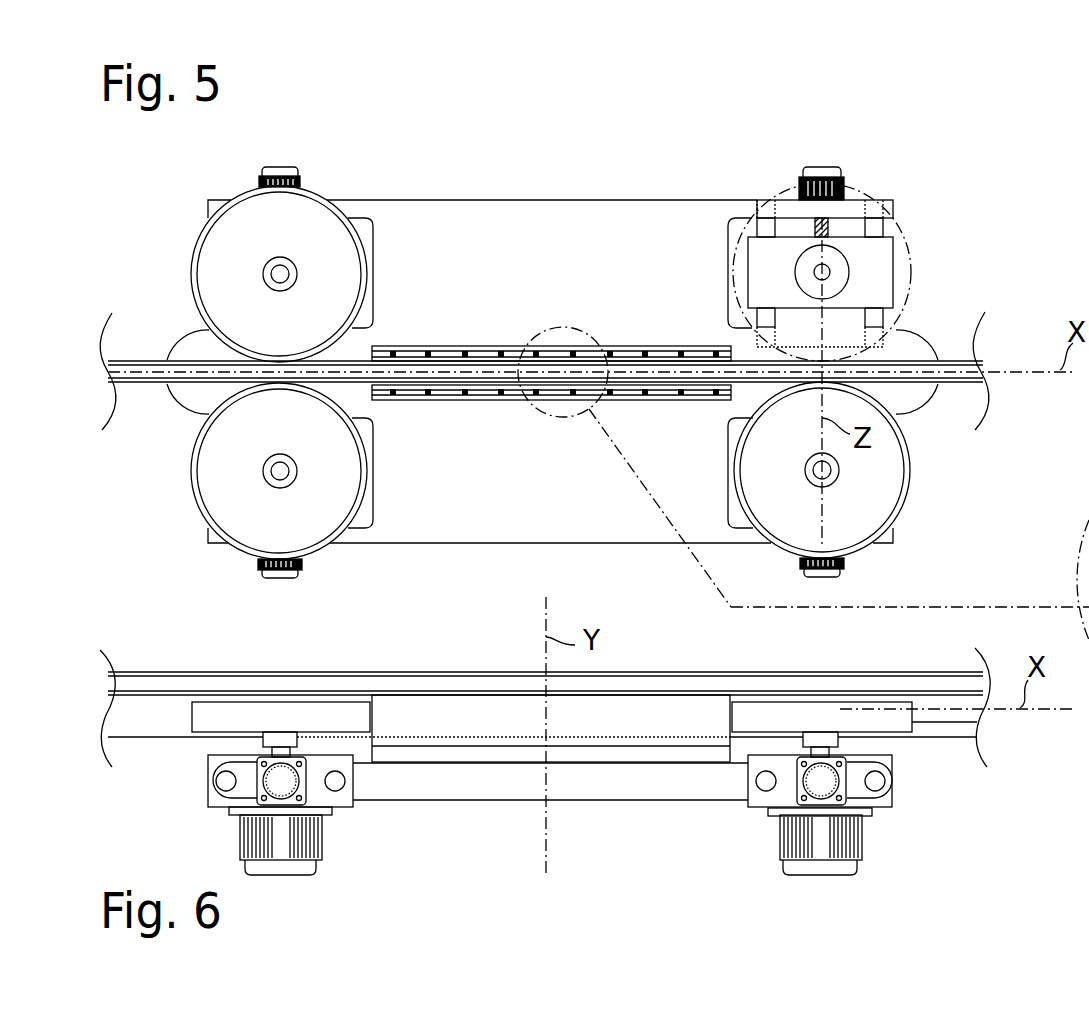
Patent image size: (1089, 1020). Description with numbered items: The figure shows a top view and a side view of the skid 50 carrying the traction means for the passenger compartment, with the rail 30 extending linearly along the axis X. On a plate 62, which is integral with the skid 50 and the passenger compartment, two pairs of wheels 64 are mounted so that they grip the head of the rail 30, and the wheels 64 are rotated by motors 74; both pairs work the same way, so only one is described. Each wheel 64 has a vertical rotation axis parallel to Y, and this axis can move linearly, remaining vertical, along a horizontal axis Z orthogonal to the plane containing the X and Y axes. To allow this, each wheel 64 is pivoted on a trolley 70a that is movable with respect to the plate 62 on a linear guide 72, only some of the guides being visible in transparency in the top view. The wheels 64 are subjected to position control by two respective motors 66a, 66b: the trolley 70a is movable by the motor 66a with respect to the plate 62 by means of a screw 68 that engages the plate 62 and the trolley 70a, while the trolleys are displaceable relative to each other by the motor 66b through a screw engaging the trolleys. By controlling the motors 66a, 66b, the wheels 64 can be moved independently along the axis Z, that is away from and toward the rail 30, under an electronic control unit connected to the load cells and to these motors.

In FIG. 5, the rail 30 is at (208, 362).
In FIG. 6, the rail 30 is at (218, 668).
In FIG. 5, the skid 50 is at (442, 345).
In FIG. 6, the skid 50 is at (521, 730).
In FIG. 5, the plate 62 is at (575, 215).
In FIG. 6, the plate 62 is at (613, 790).
In FIG. 5, the wheels 64 is at (367, 277).
In FIG. 6, the wheels 64 is at (208, 717).
In FIG. 5, the motor 66a is at (281, 166).
In FIG. 5, the motor 66b is at (283, 578).
In FIG. 6, the motor 66b is at (280, 785).
In FIG. 5, the screw 68 is at (813, 228).
In FIG. 5, the trolley 70a is at (748, 278).
In FIG. 5, the linear guide 72 is at (880, 320).
In FIG. 6, the motors 74 is at (288, 865).